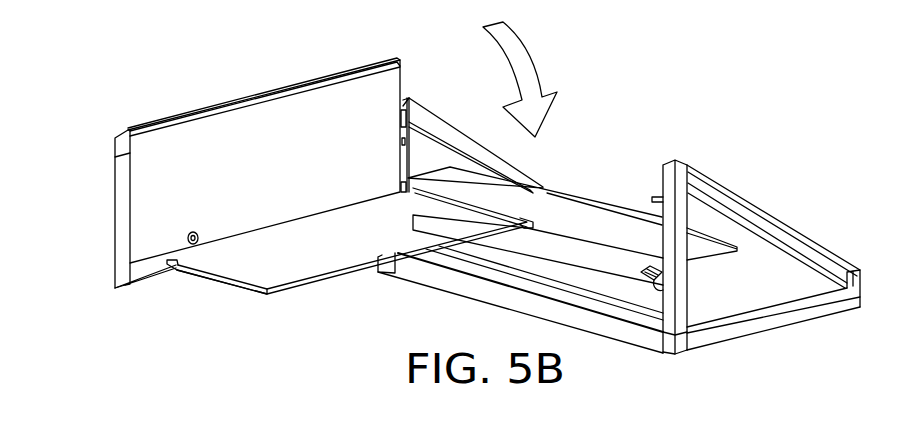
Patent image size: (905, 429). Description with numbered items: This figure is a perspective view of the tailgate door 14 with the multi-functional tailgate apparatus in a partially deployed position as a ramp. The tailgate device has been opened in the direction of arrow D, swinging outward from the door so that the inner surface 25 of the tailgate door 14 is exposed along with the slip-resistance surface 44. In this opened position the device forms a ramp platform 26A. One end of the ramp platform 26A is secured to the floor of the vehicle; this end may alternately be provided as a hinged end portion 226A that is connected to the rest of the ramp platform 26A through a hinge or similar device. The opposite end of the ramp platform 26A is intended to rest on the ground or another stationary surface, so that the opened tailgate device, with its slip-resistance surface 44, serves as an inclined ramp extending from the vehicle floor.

The tailgate door 14 is at (115, 192).
The inner surface 25 is at (140, 202).
The slip-resistance surface 44 is at (320, 247).
The ramp platform 26A is at (255, 305).
The hinged end portion 226A is at (393, 200).
The arrow D is at (535, 62).